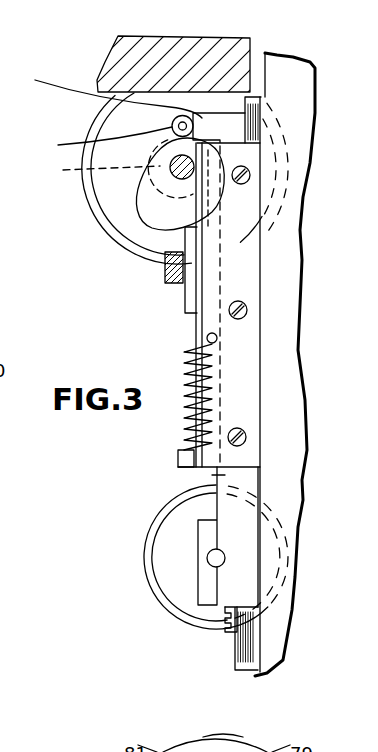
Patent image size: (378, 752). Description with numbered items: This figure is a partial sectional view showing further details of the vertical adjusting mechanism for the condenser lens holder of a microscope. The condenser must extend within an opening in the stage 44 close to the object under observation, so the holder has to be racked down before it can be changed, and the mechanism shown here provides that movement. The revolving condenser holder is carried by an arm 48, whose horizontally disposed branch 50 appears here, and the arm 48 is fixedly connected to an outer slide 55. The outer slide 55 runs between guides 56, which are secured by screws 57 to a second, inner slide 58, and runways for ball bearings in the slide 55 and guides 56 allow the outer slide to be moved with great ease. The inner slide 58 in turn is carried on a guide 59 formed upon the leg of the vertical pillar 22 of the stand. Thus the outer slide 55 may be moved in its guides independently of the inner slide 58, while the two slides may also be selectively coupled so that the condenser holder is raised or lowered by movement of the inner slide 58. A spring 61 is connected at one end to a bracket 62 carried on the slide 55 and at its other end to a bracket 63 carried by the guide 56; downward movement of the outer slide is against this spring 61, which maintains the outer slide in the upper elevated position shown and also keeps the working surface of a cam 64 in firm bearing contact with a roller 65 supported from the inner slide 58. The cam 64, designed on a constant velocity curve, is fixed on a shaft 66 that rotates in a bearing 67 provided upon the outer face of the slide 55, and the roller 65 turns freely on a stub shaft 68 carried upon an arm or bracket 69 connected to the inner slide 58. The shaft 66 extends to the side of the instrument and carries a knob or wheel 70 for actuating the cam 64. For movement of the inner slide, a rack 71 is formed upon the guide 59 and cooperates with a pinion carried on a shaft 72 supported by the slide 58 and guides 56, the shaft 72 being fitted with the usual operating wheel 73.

The vertical pillar 22 is at (268, 653).
The stage 44 is at (147, 48).
The arm 48 is at (187, 295).
The branch 50 is at (165, 267).
The outer slide 55 is at (197, 353).
The guides 56 is at (210, 312).
The screws 57 is at (248, 310).
The inner slide 58 is at (225, 477).
The guide 59 is at (250, 98).
The spring 61 is at (185, 423).
The bracket 62 is at (178, 465).
The bracket 63 is at (207, 340).
The cam 64 is at (143, 205).
The roller 65 is at (96, 143).
The shaft 66 is at (171, 174).
The bearing 67 is at (113, 169).
The stub shaft 68 is at (171, 121).
The arm or bracket 69 is at (101, 94).
The knob or wheel 70 is at (157, 181).
The rack 71 is at (225, 627).
The shaft 72 is at (208, 562).
The operating wheel 73 is at (143, 552).